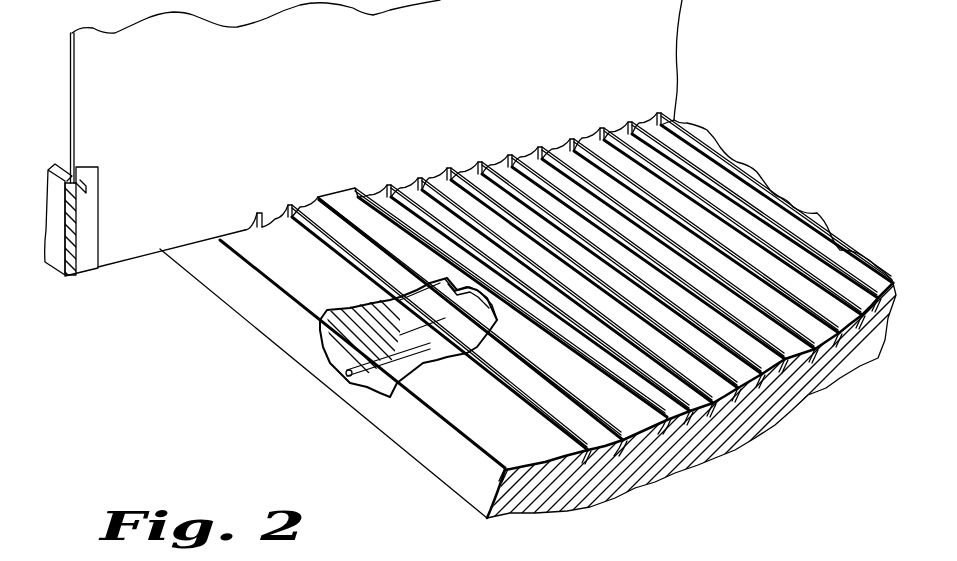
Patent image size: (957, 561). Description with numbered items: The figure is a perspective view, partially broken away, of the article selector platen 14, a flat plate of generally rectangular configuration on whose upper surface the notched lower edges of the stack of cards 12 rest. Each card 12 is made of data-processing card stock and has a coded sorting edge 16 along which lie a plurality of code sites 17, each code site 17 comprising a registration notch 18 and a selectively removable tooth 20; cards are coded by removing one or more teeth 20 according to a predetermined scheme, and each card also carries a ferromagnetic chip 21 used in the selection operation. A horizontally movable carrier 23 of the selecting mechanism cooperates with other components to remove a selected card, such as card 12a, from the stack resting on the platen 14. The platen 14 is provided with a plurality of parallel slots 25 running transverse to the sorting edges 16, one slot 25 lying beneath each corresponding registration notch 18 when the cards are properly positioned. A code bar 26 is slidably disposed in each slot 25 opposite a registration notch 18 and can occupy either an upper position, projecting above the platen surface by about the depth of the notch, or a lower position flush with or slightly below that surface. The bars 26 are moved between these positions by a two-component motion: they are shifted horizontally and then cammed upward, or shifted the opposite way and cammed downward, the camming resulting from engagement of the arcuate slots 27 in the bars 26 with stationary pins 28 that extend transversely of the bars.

The card 12 is at (822, 557).
The selected card 12a is at (377, 133).
The platen 14 is at (742, 188).
The sorting edge 16 is at (230, 227).
The code site 17 is at (249, 242).
The registration notch 18 is at (298, 216).
The tooth 20 is at (398, 183).
The ferromagnetic chip 21 is at (96, 203).
The carrier 23 is at (59, 281).
The slot 25 is at (653, 450).
The code bar 26 is at (627, 397).
The arcuate slot 27 is at (445, 277).
The stationary pin 28 is at (372, 378).